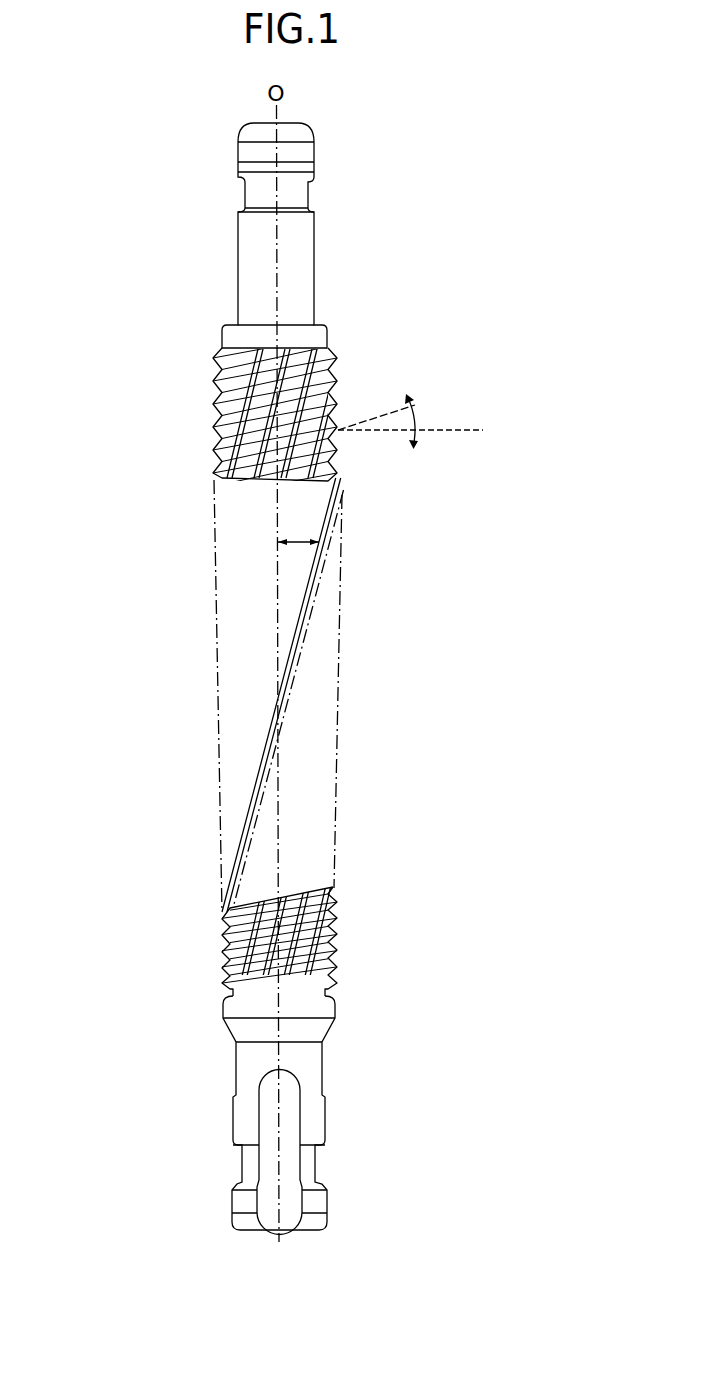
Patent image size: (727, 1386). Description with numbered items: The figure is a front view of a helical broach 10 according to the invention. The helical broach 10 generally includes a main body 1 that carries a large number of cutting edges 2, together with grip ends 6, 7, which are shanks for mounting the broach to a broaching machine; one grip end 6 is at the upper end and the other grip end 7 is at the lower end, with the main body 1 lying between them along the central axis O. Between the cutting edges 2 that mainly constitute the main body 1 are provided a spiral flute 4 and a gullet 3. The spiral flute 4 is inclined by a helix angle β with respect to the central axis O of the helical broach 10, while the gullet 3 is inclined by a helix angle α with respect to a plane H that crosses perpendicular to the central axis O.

The main body 1 is at (233, 698).
The cutting edges 2 is at (222, 437).
The gullet 3 is at (333, 402).
The spiral flute 4 is at (334, 352).
The grip end 6 is at (300, 270).
The grip end 7 is at (308, 1122).
The helical broach 10 is at (338, 840).